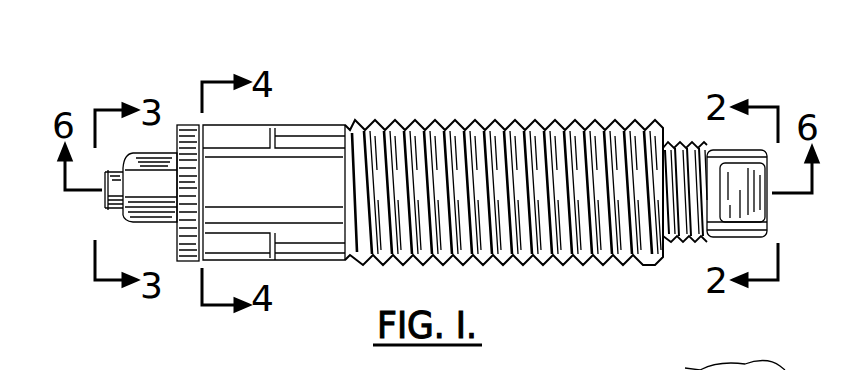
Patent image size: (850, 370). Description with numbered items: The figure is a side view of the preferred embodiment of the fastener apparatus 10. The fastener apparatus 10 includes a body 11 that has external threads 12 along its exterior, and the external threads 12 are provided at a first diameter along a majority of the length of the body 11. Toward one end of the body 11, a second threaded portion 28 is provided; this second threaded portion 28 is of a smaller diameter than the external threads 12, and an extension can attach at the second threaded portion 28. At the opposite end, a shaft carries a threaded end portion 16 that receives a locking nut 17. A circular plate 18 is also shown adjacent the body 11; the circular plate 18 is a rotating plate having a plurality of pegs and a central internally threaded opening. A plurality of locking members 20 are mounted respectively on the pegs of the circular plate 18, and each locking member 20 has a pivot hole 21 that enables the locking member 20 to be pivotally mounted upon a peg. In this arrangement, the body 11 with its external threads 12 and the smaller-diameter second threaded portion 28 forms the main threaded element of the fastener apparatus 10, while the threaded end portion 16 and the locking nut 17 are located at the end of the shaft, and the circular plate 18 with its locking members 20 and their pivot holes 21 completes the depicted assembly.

The fastener apparatus 10 is at (593, 93).
The body 11 is at (300, 127).
The external threads 12 is at (478, 123).
The threaded end portion 16 is at (108, 193).
The locking nut 17 is at (163, 218).
The circular plate 18 is at (188, 128).
The second threaded portion 28 is at (678, 147).
The locking member 20 is at (728, 366).
The pivot hole 21 is at (685, 368).